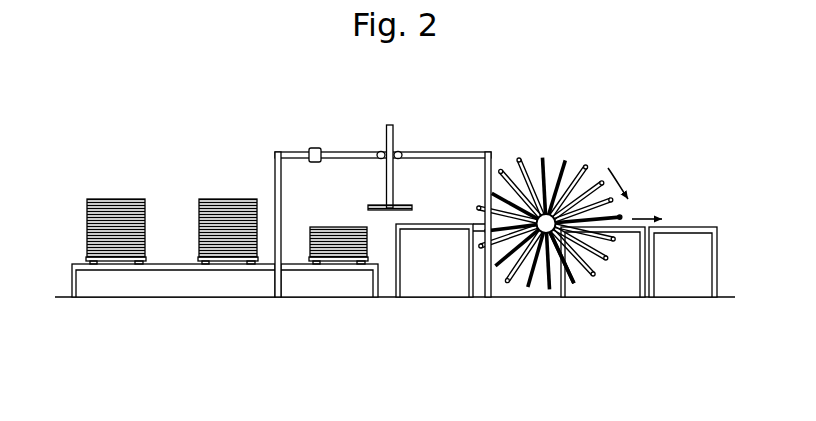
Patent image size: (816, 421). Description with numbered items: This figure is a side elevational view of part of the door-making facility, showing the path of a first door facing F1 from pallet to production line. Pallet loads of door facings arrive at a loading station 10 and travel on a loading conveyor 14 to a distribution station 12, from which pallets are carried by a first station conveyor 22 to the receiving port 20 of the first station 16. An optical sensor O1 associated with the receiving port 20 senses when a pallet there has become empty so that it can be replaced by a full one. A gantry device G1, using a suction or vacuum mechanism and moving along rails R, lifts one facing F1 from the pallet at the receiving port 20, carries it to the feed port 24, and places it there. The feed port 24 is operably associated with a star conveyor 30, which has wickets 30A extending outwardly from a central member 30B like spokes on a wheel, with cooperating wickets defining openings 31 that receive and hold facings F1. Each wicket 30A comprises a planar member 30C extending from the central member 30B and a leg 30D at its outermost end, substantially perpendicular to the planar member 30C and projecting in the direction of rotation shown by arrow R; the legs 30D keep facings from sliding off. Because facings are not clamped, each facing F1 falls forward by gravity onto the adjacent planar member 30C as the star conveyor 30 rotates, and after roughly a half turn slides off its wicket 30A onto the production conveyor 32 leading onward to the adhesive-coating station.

The loading station 10 is at (112, 189).
The distribution station 12 is at (228, 189).
The loading conveyor 14 is at (170, 266).
The first station 16 is at (383, 186).
The receiving port 20 is at (340, 275).
The first station conveyor 22 is at (268, 266).
The feed port 24 is at (441, 219).
The star conveyor 30 is at (559, 242).
The wicket 30A is at (500, 162).
The central member 30B is at (553, 228).
The planar member 30C is at (490, 270).
The leg 30D is at (551, 301).
The opening 31 is at (577, 164).
The production conveyor 32 is at (690, 218).
The first door facing F1 is at (97, 218).
The gantry device G1 is at (380, 196).
The optical sensor O1 is at (315, 145).
The rails / direction of rotation R is at (632, 203).